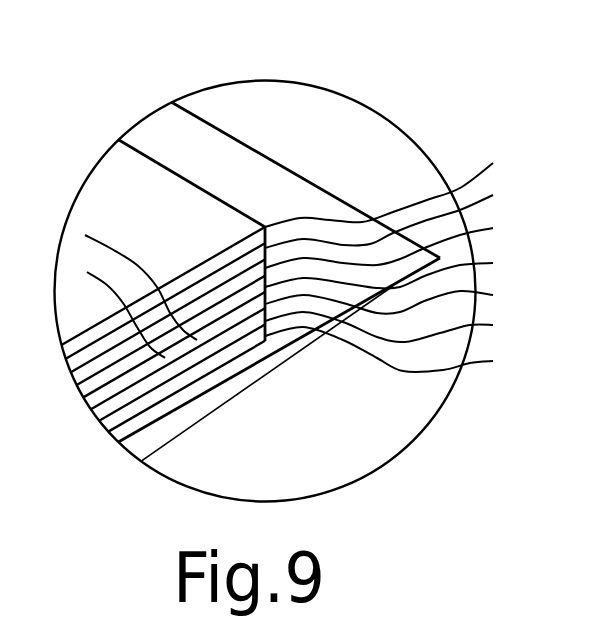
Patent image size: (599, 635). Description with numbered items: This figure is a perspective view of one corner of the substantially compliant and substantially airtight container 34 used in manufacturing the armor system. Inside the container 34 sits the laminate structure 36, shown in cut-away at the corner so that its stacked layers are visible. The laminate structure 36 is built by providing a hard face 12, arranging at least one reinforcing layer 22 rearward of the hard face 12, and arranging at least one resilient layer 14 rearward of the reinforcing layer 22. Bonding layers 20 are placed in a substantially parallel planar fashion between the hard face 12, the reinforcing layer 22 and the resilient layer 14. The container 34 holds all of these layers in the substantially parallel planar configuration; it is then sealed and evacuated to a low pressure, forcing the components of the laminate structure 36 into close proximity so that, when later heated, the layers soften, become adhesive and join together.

The hard face 12 is at (394, 185).
The resilient layer 14 is at (332, 373).
The bonding layers 20 is at (394, 259).
The reinforcing layer 22 is at (394, 262).
The substantially airtight container 34 is at (229, 137).
The laminate structure 36 is at (267, 201).